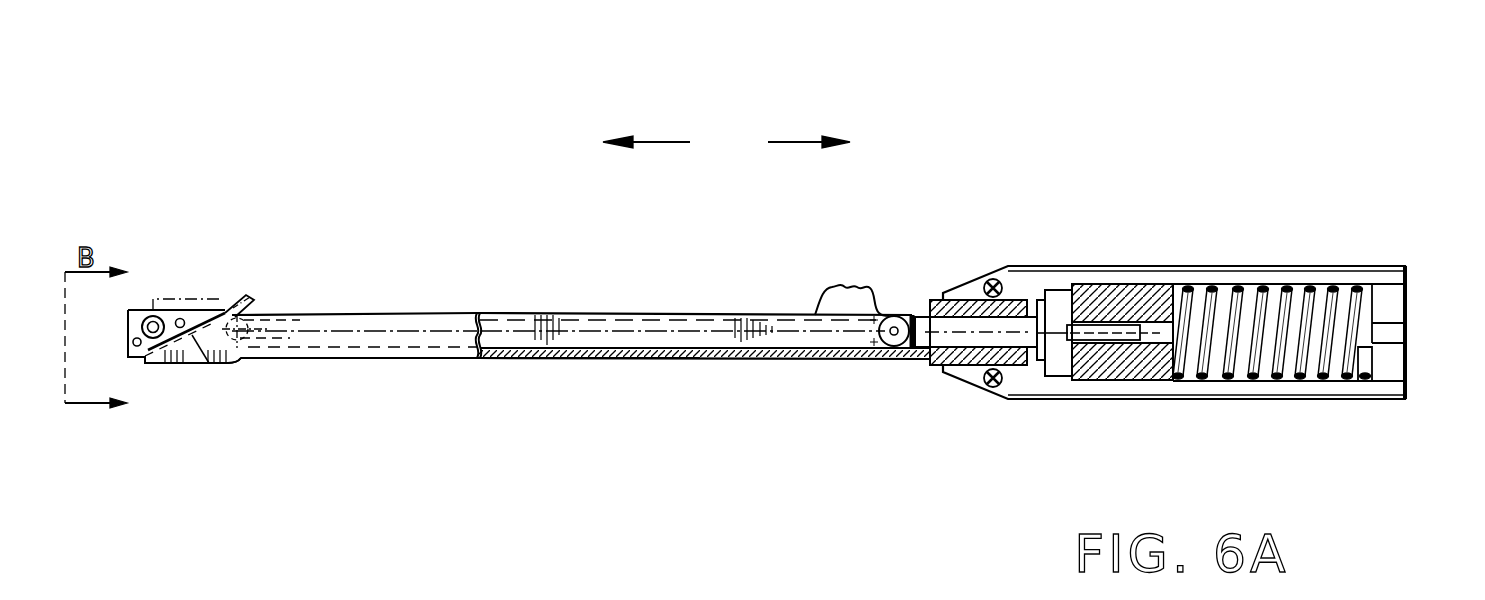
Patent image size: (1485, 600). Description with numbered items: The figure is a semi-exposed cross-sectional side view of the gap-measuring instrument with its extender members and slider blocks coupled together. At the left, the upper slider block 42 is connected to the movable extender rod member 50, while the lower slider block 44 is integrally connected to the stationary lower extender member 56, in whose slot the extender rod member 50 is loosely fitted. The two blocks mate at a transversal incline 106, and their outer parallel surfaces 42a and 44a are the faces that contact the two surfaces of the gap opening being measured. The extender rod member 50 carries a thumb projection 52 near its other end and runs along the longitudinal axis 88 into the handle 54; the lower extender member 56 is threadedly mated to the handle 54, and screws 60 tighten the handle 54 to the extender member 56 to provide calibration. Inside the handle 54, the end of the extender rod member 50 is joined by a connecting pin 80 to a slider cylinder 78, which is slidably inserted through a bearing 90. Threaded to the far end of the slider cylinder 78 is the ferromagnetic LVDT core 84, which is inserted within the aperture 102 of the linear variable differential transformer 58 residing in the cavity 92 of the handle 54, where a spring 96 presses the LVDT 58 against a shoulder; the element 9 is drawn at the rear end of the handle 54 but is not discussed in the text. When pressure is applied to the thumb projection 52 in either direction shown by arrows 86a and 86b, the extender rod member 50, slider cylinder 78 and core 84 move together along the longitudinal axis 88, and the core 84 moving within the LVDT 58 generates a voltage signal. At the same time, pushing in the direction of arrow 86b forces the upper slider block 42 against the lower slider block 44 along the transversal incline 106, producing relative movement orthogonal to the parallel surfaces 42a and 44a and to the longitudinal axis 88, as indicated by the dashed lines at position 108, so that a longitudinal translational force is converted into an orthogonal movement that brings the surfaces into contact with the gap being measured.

The end plug 9 is at (1392, 308).
The upper slider block 42 is at (128, 340).
The parallel surface 42a is at (143, 310).
The lower slider block 44 is at (231, 365).
The parallel surface 44a is at (160, 365).
The extender rod member 50 is at (534, 314).
The thumb projection 52 is at (833, 287).
The handle 54 is at (1327, 400).
The lower extender member 56 is at (449, 360).
The linear variable differential transformer 58 is at (1127, 294).
The screws 60 is at (993, 279).
The slider cylinder 78 is at (927, 340).
The connecting pin 80 is at (893, 316).
The ferromagnetic LVDT core 84 is at (1093, 341).
The arrow 86a is at (645, 142).
The arrow 86b is at (793, 142).
The longitudinal axis 88 is at (710, 332).
The bearing 90 is at (1008, 353).
The cavity 92 is at (1202, 383).
The spring 96 is at (1242, 285).
The aperture 102 is at (1167, 341).
The transversal incline 106 is at (205, 365).
The position 108 is at (243, 296).